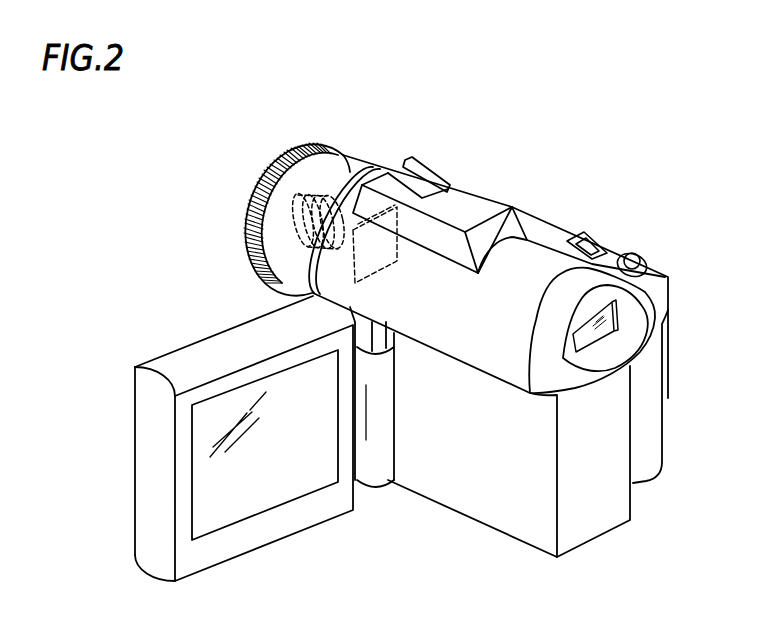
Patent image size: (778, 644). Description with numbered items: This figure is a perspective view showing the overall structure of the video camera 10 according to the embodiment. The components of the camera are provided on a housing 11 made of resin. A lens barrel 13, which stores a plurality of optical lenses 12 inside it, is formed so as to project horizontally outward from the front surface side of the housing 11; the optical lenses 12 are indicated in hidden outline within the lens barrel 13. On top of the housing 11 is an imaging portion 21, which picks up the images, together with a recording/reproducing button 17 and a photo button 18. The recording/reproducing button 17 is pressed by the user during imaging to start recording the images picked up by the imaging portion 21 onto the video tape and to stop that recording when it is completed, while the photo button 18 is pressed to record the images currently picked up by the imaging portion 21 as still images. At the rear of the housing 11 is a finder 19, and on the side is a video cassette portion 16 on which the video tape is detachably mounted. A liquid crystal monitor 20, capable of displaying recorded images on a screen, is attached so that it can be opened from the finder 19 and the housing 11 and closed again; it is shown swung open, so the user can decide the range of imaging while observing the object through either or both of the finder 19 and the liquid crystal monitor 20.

The video camera 10 is at (133, 181).
The housing 11 is at (519, 250).
The optical lenses 12 is at (308, 197).
The lens barrel 13 is at (345, 158).
The video cassette portion 16 is at (668, 398).
The recording/reproducing button 17 is at (591, 242).
The photo button 18 is at (632, 258).
The finder 19 is at (618, 312).
The liquid crystal monitor 20 is at (250, 478).
The imaging portion 21 is at (413, 197).